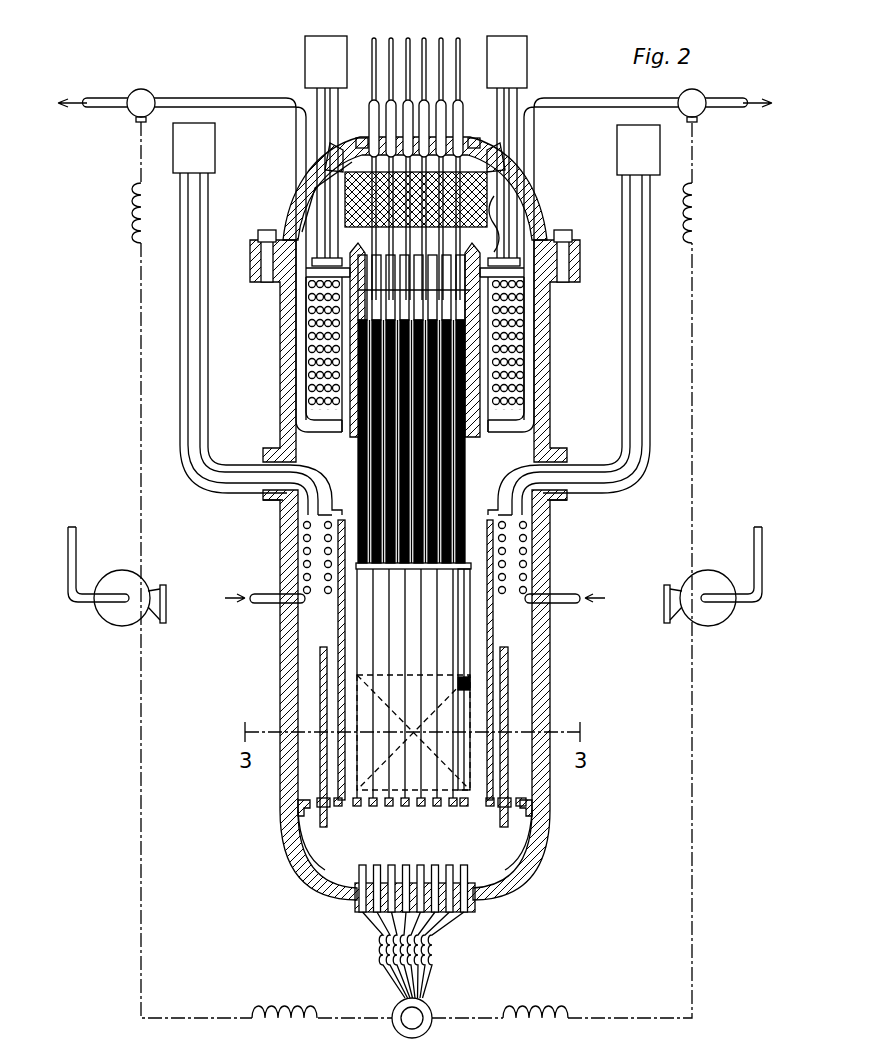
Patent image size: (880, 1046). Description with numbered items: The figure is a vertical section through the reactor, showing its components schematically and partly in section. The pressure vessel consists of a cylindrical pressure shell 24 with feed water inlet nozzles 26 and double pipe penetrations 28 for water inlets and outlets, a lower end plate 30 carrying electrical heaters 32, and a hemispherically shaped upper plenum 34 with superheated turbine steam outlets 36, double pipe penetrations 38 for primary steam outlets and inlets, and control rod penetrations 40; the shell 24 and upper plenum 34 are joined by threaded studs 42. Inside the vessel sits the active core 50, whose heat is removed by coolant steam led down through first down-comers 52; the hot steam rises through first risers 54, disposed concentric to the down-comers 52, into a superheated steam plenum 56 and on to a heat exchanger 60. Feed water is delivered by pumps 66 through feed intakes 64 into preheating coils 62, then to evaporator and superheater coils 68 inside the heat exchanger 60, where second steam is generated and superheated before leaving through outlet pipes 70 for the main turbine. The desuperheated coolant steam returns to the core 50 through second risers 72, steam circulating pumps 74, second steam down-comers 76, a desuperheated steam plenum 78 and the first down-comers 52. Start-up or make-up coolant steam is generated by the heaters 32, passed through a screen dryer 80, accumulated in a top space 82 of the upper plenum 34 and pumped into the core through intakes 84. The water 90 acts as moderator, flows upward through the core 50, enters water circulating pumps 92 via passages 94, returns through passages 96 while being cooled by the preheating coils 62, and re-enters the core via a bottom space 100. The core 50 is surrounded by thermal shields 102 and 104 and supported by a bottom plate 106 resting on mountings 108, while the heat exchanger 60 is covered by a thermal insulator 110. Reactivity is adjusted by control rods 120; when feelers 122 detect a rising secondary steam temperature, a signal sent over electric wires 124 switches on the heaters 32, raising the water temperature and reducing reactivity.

The cylindrical pressure shell 24 is at (546, 520).
The feed water inlet nozzles 26 is at (572, 604).
The double pipe penetrations 28 is at (553, 463).
The lower end plate 30 is at (490, 885).
The electrical heaters 32 is at (360, 870).
The upper plenum 34 is at (289, 208).
The superheated turbine steam outlets 36 is at (306, 182).
The double pipe penetrations 38 is at (315, 145).
The control rod penetrations 40 is at (464, 132).
The threaded studs 42 is at (265, 234).
The active core 50 is at (410, 707).
The first down-comers 52 is at (360, 480).
The first risers 54 is at (340, 520).
The superheated steam plenum 56 is at (478, 258).
The heat exchanger 60 is at (298, 332).
The preheating coils 62 is at (482, 510).
The feed intakes 64 is at (555, 593).
The pumps 66 is at (700, 580).
The evaporator and superheater coils 68 is at (304, 362).
The outlet pipes 70 is at (228, 98).
The second risers 72 is at (518, 162).
The steam circulating pumps 74 is at (524, 64).
The second steam down-comers 76 is at (516, 180).
The desuperheated steam plenum 78 is at (470, 320).
The screen dryer 80 is at (502, 214).
The top space 82 is at (508, 152).
The intakes 84 is at (364, 138).
The water 90 is at (300, 660).
The water circulating pumps 92 is at (618, 140).
The passages 94 is at (628, 342).
The passages 96 is at (648, 372).
The bottom space 100 is at (390, 830).
The thermal shield 102 is at (320, 690).
The thermal shield 104 is at (490, 697).
The bottom plate 106 is at (540, 850).
The mountings 108 is at (530, 818).
The thermal insulator 110 is at (302, 388).
The control rods 120 is at (441, 46).
The feelers 122 is at (141, 89).
The electric wires 124 is at (131, 222).